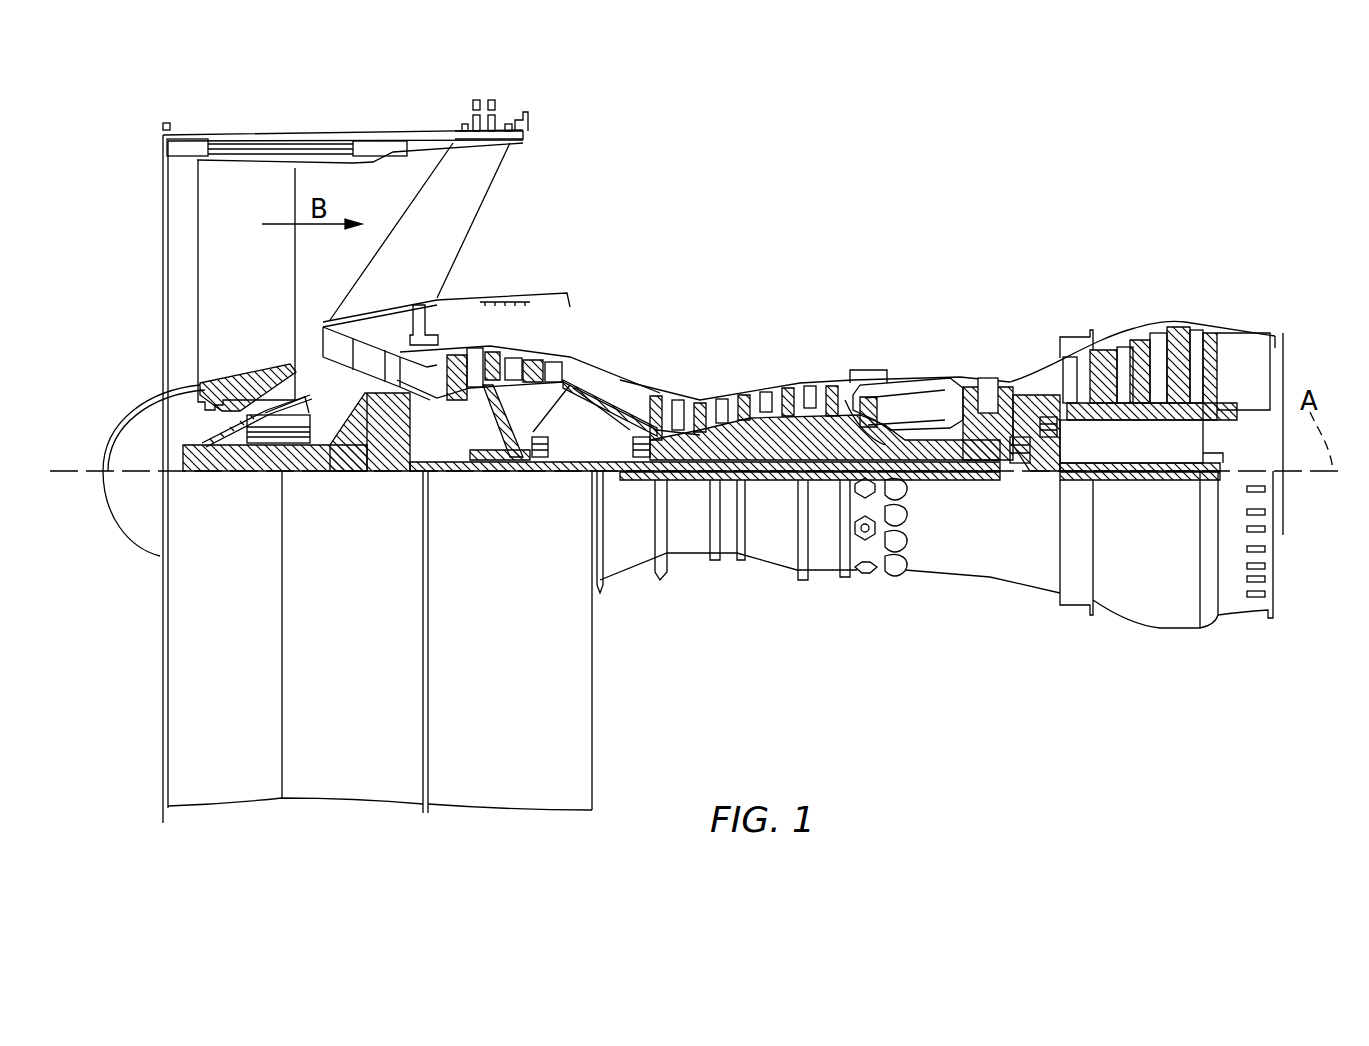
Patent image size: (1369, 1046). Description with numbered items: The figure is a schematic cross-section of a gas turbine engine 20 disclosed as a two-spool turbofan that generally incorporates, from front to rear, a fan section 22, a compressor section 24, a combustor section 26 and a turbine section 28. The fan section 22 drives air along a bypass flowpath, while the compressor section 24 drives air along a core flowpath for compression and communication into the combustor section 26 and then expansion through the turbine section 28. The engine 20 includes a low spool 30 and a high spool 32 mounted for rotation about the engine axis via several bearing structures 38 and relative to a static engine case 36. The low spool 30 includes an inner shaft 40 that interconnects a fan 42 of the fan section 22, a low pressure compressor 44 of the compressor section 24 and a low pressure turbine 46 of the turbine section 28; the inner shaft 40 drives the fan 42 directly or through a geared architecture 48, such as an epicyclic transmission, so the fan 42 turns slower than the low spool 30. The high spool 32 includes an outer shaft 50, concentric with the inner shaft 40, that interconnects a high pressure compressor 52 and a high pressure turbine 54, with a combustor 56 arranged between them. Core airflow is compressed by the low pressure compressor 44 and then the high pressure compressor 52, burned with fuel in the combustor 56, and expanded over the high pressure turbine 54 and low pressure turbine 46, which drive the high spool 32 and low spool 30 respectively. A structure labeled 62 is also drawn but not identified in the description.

The gas turbine engine 20 is at (948, 176).
The fan section 22 is at (425, 110).
The compressor section 24 is at (437, 268).
The combustor section 26 is at (968, 268).
The turbine section 28 is at (1210, 268).
The low spool 30 is at (777, 482).
The high spool 32 is at (820, 437).
The static engine case 36 is at (828, 578).
The bearing structures 38 is at (255, 445).
The inner shaft 40 is at (622, 482).
The fan 42 is at (264, 314).
The low pressure compressor 44 is at (513, 363).
The low pressure turbine 46 is at (1133, 330).
The geared architecture 48 is at (380, 472).
The outer shaft 50 is at (912, 475).
The high pressure compressor 52 is at (757, 435).
The high pressure turbine 54 is at (985, 375).
The combustor 56 is at (912, 400).
The fan exit guide vane 62 is at (430, 143).